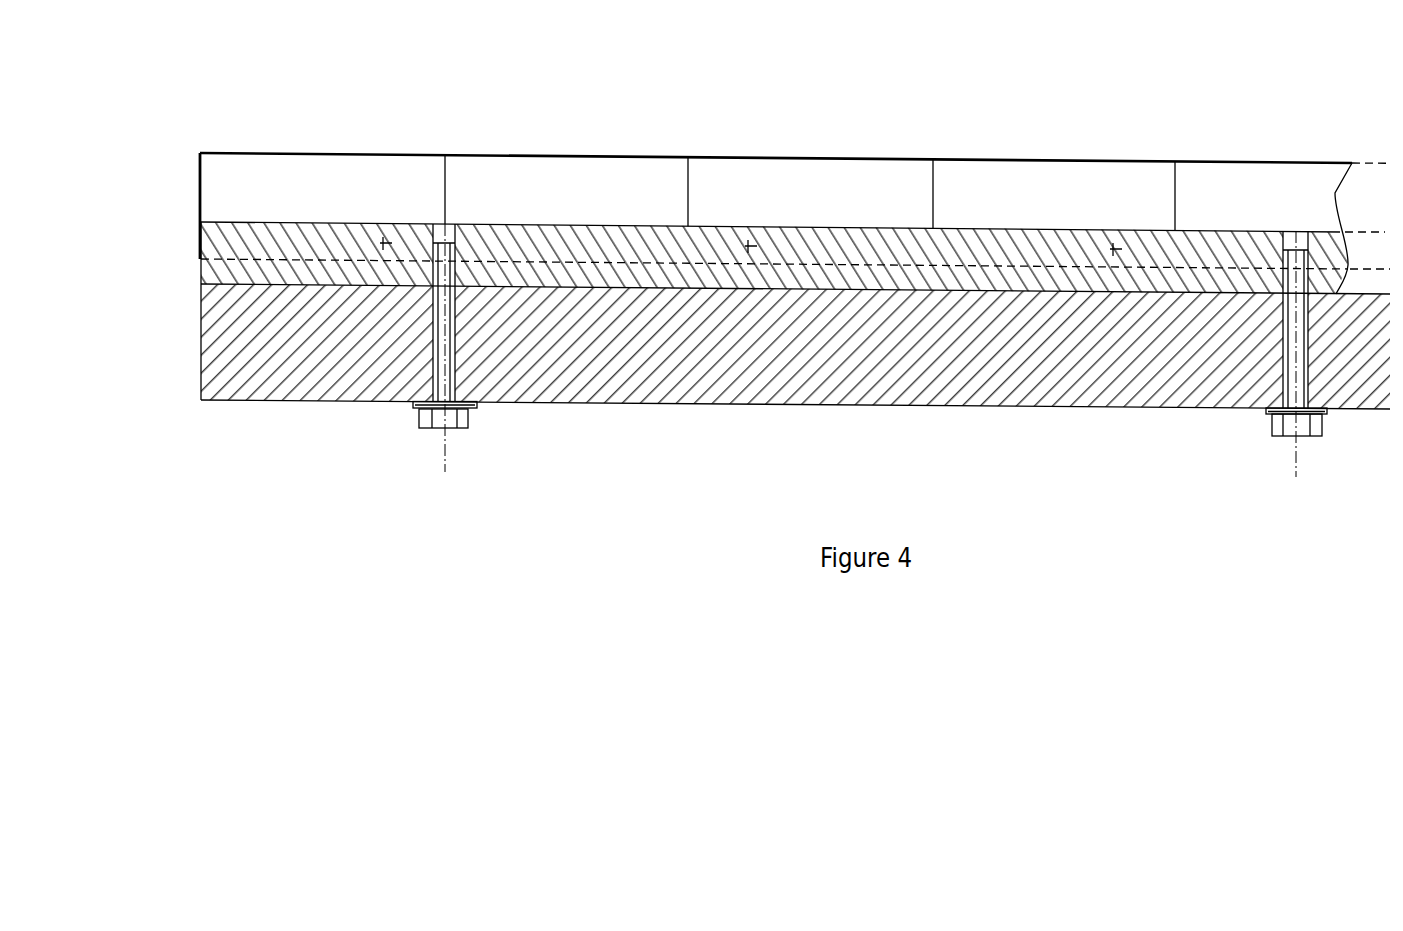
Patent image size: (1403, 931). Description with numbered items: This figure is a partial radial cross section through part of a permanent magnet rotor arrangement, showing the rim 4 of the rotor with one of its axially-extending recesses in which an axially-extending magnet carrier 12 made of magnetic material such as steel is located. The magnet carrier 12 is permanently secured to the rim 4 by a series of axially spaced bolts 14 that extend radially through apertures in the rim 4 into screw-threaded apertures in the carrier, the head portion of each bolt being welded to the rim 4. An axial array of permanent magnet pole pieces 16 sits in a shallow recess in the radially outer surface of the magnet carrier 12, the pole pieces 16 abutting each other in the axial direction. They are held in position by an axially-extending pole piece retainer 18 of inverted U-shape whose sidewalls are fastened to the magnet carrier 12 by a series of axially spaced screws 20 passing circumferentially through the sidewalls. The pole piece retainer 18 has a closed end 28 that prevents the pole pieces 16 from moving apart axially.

The rim 4 is at (938, 373).
The magnet carrier 12 is at (822, 250).
The bolts 14 is at (1295, 393).
The permanent magnet pole pieces 16 is at (550, 185).
The pole piece retainer 18 is at (325, 152).
The screws 20 is at (1112, 245).
The closed end 28 is at (198, 205).